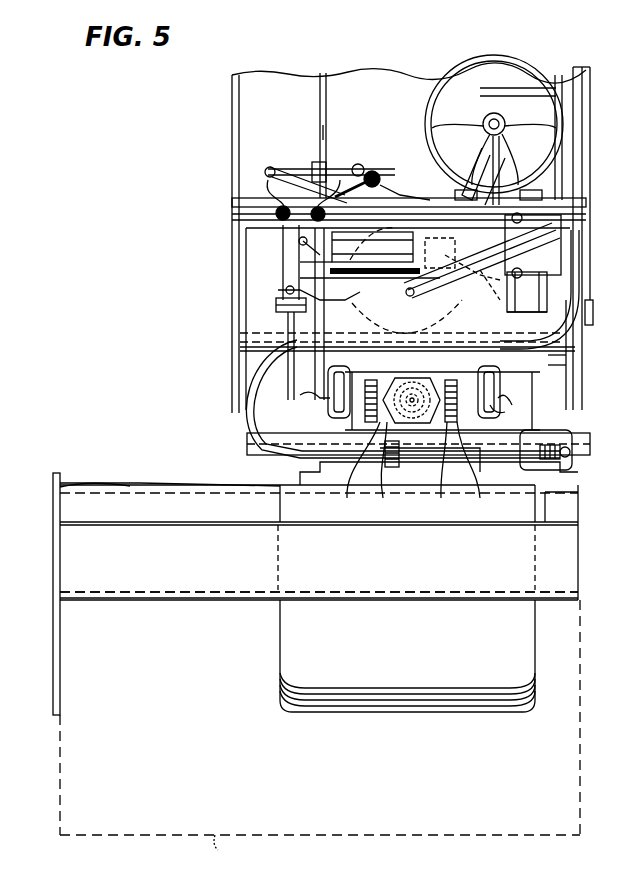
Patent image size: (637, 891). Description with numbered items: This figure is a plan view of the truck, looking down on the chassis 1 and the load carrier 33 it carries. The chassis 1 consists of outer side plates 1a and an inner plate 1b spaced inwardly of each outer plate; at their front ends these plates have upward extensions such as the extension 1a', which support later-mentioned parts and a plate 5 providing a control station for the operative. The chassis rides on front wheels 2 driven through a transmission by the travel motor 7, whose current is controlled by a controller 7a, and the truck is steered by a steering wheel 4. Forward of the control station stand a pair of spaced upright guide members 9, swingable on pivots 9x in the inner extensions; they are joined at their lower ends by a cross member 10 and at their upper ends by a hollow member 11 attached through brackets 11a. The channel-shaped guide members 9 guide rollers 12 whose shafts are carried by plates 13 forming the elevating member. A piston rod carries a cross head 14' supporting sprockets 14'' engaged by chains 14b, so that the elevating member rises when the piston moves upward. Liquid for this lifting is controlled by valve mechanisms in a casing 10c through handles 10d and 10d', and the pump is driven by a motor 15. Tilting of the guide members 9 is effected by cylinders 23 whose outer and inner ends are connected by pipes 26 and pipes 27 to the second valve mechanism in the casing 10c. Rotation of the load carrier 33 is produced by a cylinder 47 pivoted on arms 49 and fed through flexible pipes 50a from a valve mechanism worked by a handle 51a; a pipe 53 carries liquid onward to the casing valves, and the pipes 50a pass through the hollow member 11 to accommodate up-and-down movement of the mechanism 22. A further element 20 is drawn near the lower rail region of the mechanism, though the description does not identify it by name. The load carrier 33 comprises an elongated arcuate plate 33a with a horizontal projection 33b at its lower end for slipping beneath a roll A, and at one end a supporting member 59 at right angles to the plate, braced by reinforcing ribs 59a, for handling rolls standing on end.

The chassis 1 is at (392, 236).
The outer side plate 1a is at (408, 240).
The upwardly disposed extension 1a' is at (604, 318).
The inner plate 1b is at (327, 113).
The front wheel 2 is at (575, 364).
The steering wheel 4 is at (563, 116).
The plate 5 is at (330, 131).
The motor 7 is at (452, 296).
The controller 7a is at (300, 272).
The upright guide member 9 is at (492, 410).
The pivot 9x is at (407, 325).
The cross member 10 is at (388, 362).
The valve casing 10c is at (572, 262).
The operating handle 10d is at (298, 184).
The operating handle 10d' is at (331, 182).
The hollow member 11 is at (432, 345).
The bracket 11a is at (322, 402).
The roller 12 is at (340, 418).
The plate 13 is at (475, 468).
The chain 14b is at (361, 468).
The cross head 14' is at (388, 468).
The sprocket 14'' is at (448, 468).
The motor 15 is at (572, 170).
The slide rail 20 is at (250, 438).
The mechanism 22 is at (453, 463).
The cylinder 23 is at (278, 303).
The pipe 26 is at (300, 292).
The pipe 27 is at (377, 251).
The load carrier 33 is at (320, 660).
The elongated plate 33a is at (188, 598).
The horizontal projection 33b is at (280, 670).
The cylinder 47 is at (573, 448).
The arm 49 is at (566, 432).
The flexible pipe 50a is at (268, 346).
The handle 51a is at (378, 168).
The pipe 53 is at (316, 165).
The supporting member 59 is at (53, 660).
The reinforcing rib 59a is at (75, 482).
The roll A is at (219, 850).